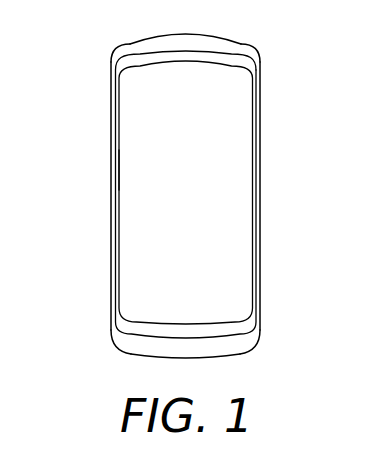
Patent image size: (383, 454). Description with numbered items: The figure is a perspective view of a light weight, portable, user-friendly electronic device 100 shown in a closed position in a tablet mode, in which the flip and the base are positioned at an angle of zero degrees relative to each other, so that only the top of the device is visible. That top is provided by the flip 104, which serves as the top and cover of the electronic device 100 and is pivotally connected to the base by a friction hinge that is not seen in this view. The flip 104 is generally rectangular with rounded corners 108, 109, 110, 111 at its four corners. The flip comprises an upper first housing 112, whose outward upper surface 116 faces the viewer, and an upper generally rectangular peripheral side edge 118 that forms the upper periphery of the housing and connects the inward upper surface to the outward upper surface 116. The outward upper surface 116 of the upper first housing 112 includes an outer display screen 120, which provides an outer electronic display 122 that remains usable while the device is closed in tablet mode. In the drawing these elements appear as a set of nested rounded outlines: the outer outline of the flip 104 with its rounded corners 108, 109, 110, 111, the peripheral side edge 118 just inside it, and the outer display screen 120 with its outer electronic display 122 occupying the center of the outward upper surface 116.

The electronic device 100 is at (178, 192).
The flip 104 is at (257, 171).
The rounded corner 108 is at (123, 53).
The rounded corner 109 is at (249, 50).
The rounded corner 110 is at (115, 329).
The rounded corner 111 is at (258, 327).
The upper first housing 112 is at (118, 218).
The outward upper surface 116 is at (257, 218).
The upper generally rectangular peripheral side edge 118 is at (257, 67).
The outer display screen 120 is at (238, 126).
The outer electronic display 122 is at (133, 172).